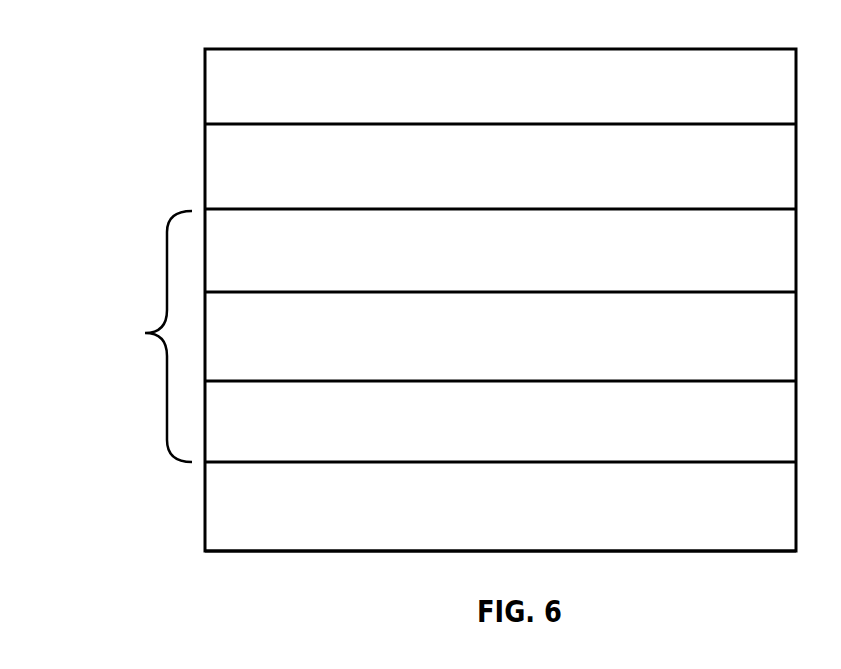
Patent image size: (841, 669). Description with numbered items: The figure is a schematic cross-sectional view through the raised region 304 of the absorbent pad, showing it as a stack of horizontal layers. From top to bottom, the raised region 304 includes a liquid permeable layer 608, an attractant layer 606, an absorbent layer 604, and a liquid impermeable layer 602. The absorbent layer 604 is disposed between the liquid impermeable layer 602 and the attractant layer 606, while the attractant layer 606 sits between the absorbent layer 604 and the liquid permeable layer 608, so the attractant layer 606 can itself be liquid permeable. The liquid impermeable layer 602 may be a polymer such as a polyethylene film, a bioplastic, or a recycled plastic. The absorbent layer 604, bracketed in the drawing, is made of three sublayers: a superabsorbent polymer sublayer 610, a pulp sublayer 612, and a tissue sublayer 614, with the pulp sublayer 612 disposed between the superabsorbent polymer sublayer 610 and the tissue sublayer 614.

The raised region 304 is at (98, 62).
The liquid impermeable layer 602 is at (538, 513).
The absorbent layer 604 is at (146, 333).
The attractant layer 606 is at (538, 183).
The liquid permeable layer 608 is at (538, 103).
The superabsorbent polymer sublayer 610 is at (538, 265).
The pulp sublayer 612 is at (538, 348).
The tissue sublayer 614 is at (538, 431).